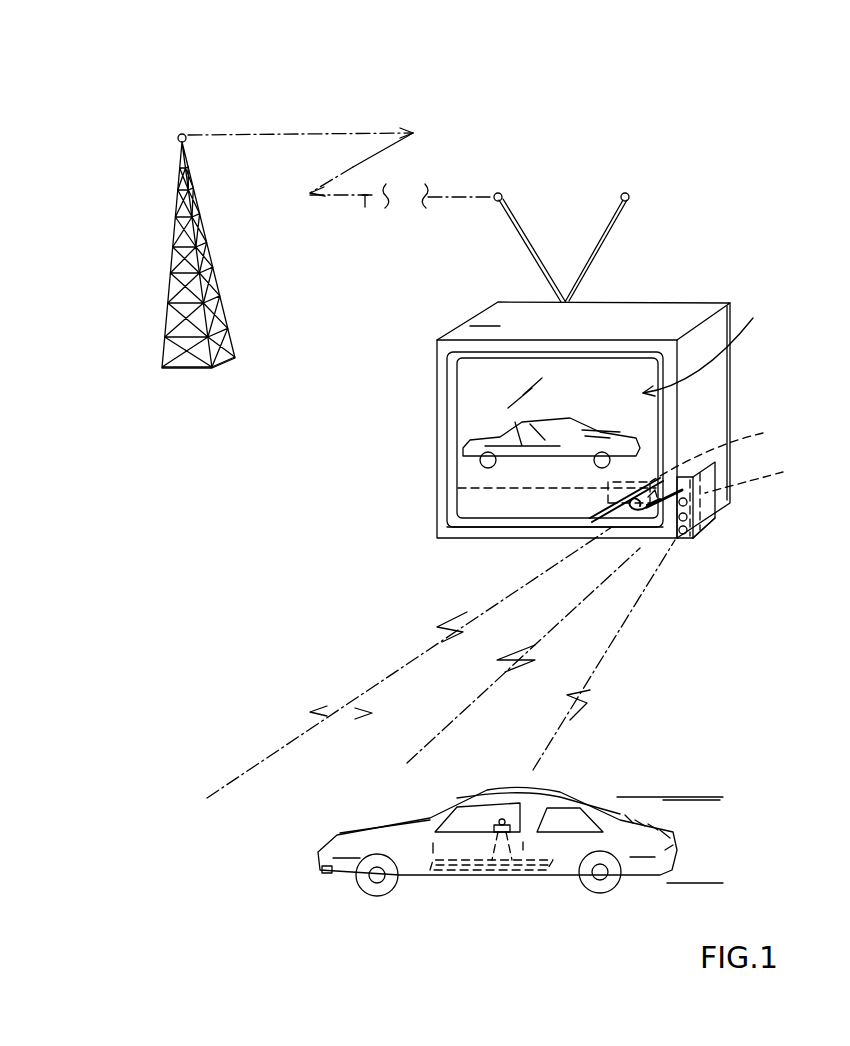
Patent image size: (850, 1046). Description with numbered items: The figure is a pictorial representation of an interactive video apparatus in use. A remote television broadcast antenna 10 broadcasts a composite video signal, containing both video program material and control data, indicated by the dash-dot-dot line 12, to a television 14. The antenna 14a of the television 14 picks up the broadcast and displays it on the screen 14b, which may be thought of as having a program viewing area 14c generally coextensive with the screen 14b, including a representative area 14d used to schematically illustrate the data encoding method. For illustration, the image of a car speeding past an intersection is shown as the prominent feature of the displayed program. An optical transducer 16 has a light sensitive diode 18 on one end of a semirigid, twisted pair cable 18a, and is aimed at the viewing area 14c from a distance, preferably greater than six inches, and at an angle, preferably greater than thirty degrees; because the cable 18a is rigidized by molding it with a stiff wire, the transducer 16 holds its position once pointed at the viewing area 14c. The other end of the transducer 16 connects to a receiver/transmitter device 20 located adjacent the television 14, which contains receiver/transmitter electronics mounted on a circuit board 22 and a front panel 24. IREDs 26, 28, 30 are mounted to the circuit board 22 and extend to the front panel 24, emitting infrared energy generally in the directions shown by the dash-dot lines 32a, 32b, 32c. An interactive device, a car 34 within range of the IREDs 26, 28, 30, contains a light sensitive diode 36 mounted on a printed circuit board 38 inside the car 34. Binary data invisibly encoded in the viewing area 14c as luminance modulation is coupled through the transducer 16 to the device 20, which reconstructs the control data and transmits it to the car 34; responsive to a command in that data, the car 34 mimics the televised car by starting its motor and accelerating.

The remote television broadcast antenna 10 is at (172, 257).
The dash-dot-dot line 12 is at (365, 210).
The television 14 is at (650, 313).
The antenna 14a is at (522, 245).
The screen 14b is at (714, 347).
The program viewing area 14c is at (467, 497).
The representative area 14d is at (512, 528).
The optical transducer 16 is at (690, 463).
The light sensitive diode 18 is at (618, 503).
The semirigid twisted pair cable 18a is at (647, 517).
The receiver/transmitter device 20 is at (712, 478).
The circuit board 22 is at (760, 476).
The front panel 24 is at (699, 462).
The IRED 26 is at (700, 533).
The IRED 28 is at (690, 515).
The IRED 30 is at (693, 502).
The dash-dot line 32a is at (570, 717).
The dash-dot line 32b is at (428, 743).
The dash-dot line 32c is at (295, 750).
The car 34 is at (350, 842).
The light sensitive diode 36 is at (497, 828).
The printed circuit board 38 is at (493, 880).